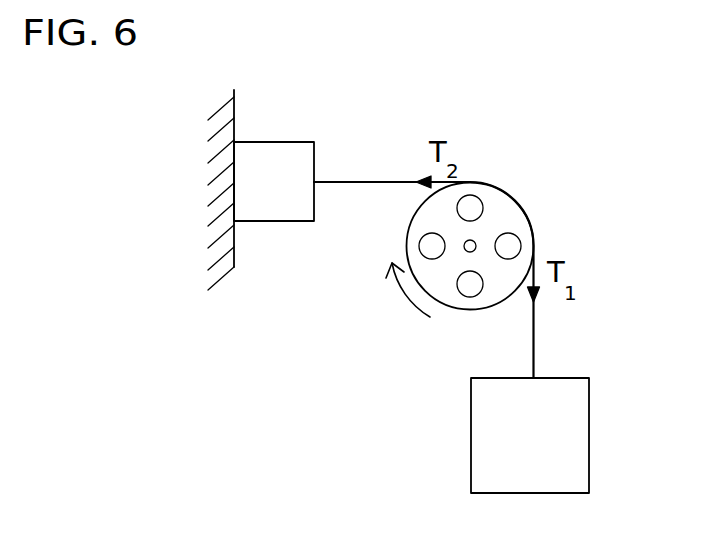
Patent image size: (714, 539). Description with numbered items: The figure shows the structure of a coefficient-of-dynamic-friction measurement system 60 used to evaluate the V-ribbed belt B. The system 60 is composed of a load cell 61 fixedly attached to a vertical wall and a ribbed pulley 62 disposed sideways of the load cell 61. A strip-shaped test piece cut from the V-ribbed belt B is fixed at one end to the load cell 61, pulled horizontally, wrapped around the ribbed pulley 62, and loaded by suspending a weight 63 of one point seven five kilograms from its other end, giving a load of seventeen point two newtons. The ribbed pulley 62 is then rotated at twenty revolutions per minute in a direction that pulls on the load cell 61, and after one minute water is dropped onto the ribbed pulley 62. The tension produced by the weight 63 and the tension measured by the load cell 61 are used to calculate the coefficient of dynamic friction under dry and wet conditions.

The coefficient-of-dynamic-friction measurement system 60 is at (610, 166).
The load cell 61 is at (283, 142).
The ribbed pulley 62 is at (407, 237).
The weight 63 is at (590, 430).
The V-ribbed belt B is at (353, 181).